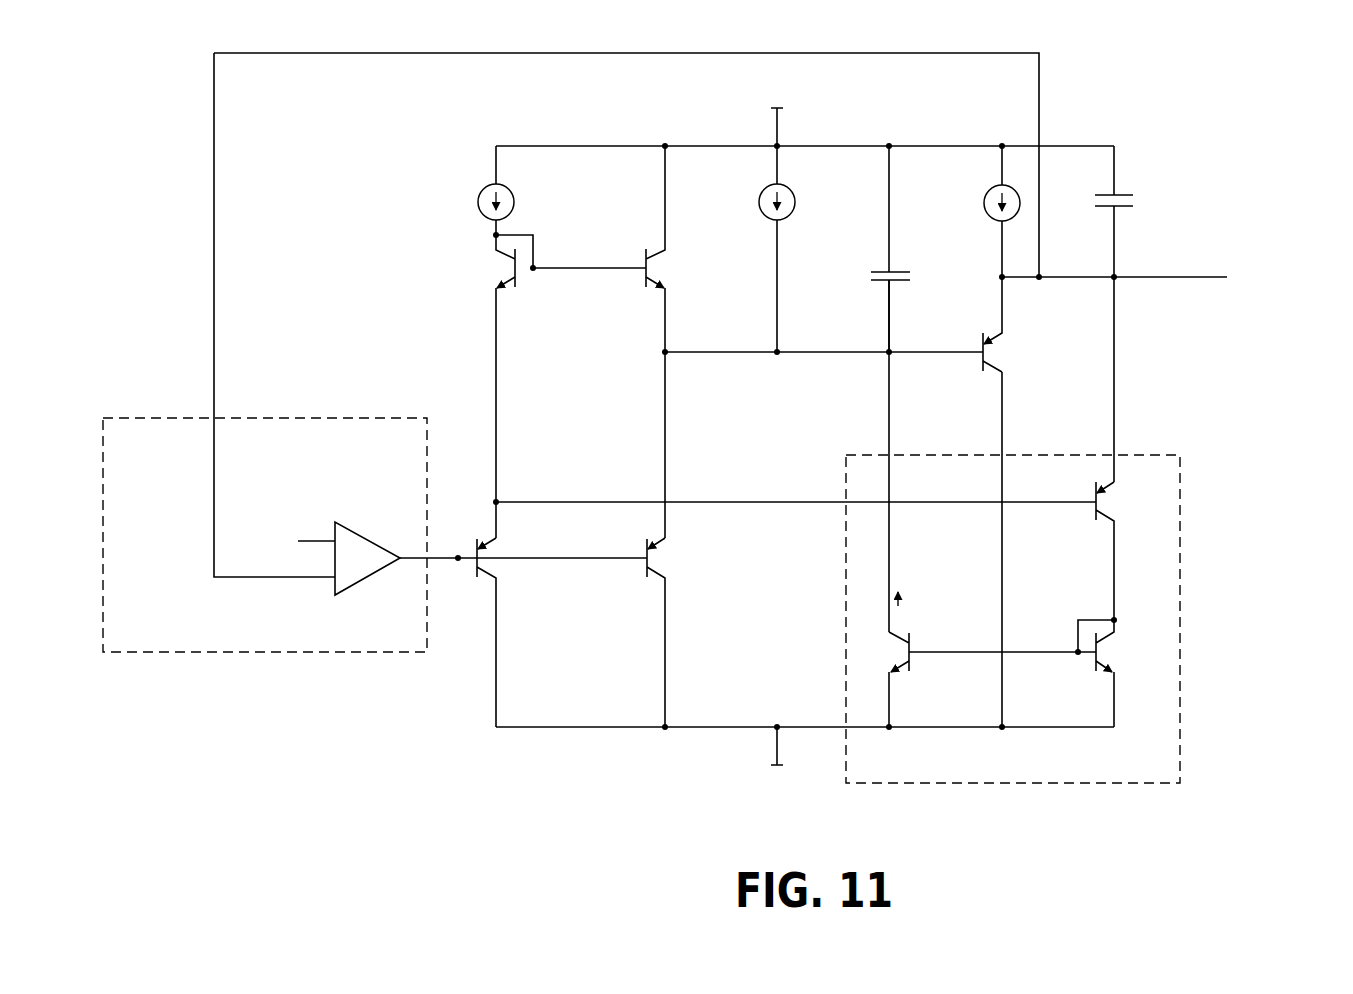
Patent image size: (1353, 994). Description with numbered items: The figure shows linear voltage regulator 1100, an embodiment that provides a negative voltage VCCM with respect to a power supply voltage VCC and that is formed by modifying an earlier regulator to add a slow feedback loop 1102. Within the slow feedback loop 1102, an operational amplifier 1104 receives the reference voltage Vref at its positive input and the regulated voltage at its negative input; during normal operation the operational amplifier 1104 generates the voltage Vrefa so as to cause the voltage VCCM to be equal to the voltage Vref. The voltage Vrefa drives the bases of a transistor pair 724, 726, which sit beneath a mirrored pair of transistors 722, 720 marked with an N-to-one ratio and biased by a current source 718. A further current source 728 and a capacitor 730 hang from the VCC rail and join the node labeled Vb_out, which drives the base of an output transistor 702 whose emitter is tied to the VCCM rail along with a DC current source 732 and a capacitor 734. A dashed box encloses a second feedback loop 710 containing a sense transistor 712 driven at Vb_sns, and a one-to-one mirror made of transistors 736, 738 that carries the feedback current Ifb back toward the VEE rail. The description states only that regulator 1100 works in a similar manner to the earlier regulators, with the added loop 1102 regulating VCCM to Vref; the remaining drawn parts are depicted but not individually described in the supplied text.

The linear voltage regulator 1100 is at (1271, 71).
The feedback loop 1102 is at (354, 419).
The operational amplifier 1104 is at (349, 528).
The output transistor 702 is at (983, 371).
The feedback loop 710 is at (1181, 591).
The sense transistor 712 is at (1096, 522).
The current source 718 is at (515, 208).
The transistor 720 is at (645, 250).
The transistor 722 is at (520, 287).
The transistor 724 is at (496, 580).
The transistor 726 is at (647, 578).
The current source 728 is at (796, 204).
The capacitor 730 is at (871, 282).
The DC current source 732 is at (985, 192).
The capacitor 734 is at (1133, 208).
The transistor 736 is at (913, 672).
The transistor 738 is at (1094, 668).